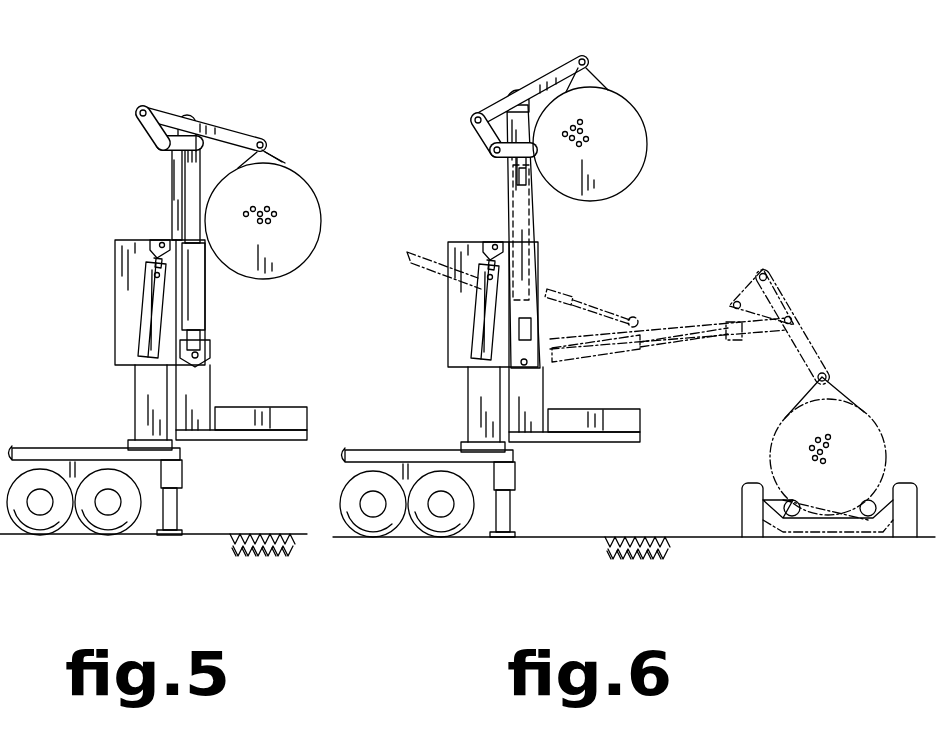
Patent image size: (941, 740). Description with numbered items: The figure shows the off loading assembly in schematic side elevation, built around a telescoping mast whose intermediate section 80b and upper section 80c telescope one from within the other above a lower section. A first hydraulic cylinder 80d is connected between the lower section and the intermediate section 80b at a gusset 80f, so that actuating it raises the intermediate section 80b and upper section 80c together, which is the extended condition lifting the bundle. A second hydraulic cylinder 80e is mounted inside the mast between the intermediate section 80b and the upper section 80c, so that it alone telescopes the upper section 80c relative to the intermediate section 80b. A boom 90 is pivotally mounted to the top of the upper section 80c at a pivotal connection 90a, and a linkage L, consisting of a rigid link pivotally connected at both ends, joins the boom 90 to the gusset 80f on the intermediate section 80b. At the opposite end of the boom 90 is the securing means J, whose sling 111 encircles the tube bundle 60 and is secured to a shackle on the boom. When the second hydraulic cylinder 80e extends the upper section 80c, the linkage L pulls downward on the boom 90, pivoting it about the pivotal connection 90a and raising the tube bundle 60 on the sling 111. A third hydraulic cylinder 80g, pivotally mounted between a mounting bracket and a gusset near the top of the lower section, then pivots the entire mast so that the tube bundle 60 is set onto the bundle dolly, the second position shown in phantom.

In FIG. 5, the linkage L is at (143, 110).
In FIG. 5, the securing means J is at (269, 134).
In FIG. 5, the boom 90 is at (243, 140).
In FIG. 5, the pivotal connection 90a is at (187, 121).
In FIG. 5, the intermediate section 80b is at (172, 200).
In FIG. 6, the upper section 80c is at (500, 136).
In FIG. 5, the first hydraulic cylinder 80d is at (205, 298).
In FIG. 6, the second hydraulic cylinder 80e is at (528, 205).
In FIG. 5, the gusset 80f is at (160, 151).
In FIG. 5, the third hydraulic cylinder 80g is at (148, 312).
In FIG. 6, the third hydraulic cylinder 80g is at (439, 301).
In FIG. 5, the tube bundle 60 is at (318, 202).
In FIG. 5, the sling 111 is at (282, 162).